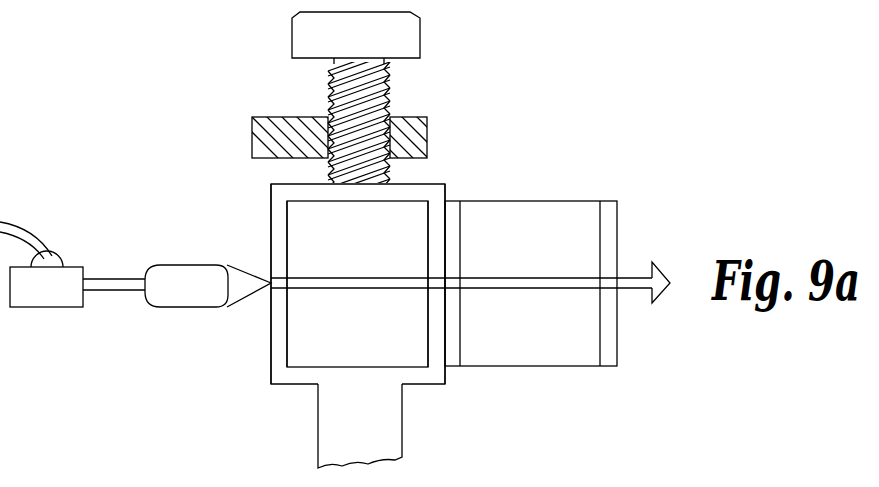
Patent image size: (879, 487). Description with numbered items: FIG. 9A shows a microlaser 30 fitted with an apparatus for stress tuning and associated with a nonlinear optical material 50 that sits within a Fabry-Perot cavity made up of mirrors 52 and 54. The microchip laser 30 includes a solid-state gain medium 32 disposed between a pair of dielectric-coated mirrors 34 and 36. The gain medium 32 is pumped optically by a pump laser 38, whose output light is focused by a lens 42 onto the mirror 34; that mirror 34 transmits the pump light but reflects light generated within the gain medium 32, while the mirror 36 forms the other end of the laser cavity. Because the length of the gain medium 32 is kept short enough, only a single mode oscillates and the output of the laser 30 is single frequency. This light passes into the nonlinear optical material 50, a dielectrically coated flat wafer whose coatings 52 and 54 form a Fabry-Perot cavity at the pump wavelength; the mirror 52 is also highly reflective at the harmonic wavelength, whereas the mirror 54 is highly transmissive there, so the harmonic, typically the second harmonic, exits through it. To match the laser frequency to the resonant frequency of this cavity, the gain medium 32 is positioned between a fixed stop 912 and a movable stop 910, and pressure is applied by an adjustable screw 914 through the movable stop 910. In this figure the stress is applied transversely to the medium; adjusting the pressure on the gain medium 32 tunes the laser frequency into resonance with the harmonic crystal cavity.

The microchip laser 30 is at (257, 357).
The solid-state gain medium 32 is at (407, 352).
The mirror 34 is at (275, 212).
The mirror 36 is at (432, 222).
The pump laser 38 is at (55, 308).
The lens 42 is at (178, 308).
The nonlinear optical material wafer 50 is at (543, 357).
The dielectric coating (mirror) 52 is at (453, 360).
The dielectric coating (mirror) 54 is at (610, 367).
The movable stop 910 is at (427, 182).
The fixed stop 912 is at (323, 423).
The adjustable screw 914 is at (392, 84).